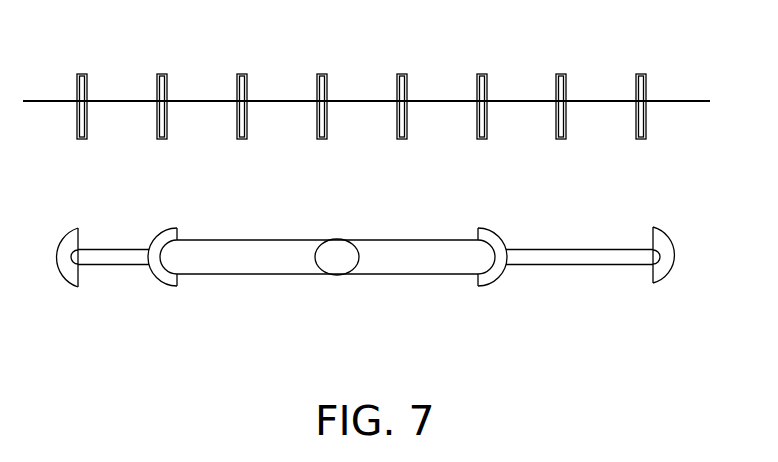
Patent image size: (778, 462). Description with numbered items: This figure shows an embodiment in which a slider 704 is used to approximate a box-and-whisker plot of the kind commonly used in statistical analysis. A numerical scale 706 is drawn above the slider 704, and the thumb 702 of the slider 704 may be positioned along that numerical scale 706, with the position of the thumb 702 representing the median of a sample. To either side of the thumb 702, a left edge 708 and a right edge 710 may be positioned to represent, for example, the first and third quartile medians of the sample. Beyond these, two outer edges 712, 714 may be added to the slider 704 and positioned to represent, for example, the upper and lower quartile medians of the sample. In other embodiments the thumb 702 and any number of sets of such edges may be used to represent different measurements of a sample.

The thumb 702 is at (338, 289).
The slider 704 is at (379, 279).
The numerical scale 706 is at (199, 74).
The left edge 708 is at (169, 295).
The right edge 710 is at (488, 295).
The outer edge 712 is at (75, 290).
The outer edge 714 is at (658, 289).